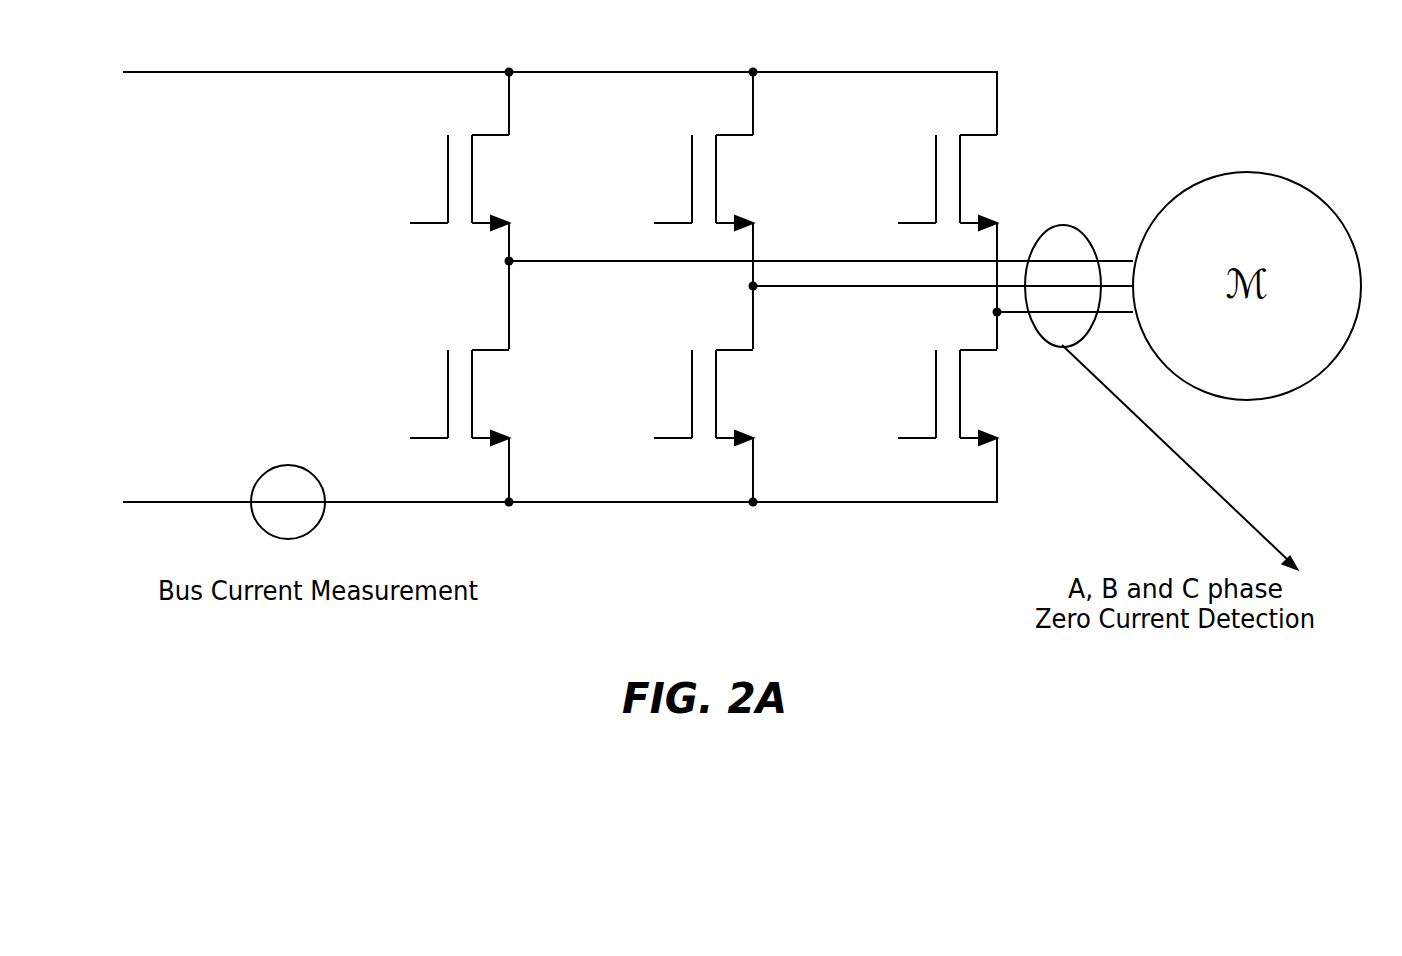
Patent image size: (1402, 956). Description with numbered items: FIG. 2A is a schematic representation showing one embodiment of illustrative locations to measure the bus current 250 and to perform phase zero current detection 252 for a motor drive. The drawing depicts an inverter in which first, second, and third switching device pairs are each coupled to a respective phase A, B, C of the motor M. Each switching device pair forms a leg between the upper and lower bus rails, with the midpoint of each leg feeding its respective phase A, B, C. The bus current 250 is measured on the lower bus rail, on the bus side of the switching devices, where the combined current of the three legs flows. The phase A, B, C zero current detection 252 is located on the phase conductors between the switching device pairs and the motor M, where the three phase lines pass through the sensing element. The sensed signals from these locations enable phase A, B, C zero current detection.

The bus current 250 is at (285, 465).
The phase zero current detection 252 is at (1178, 458).
The phase A is at (771, 258).
The phase B is at (893, 258).
The phase C is at (1015, 229).